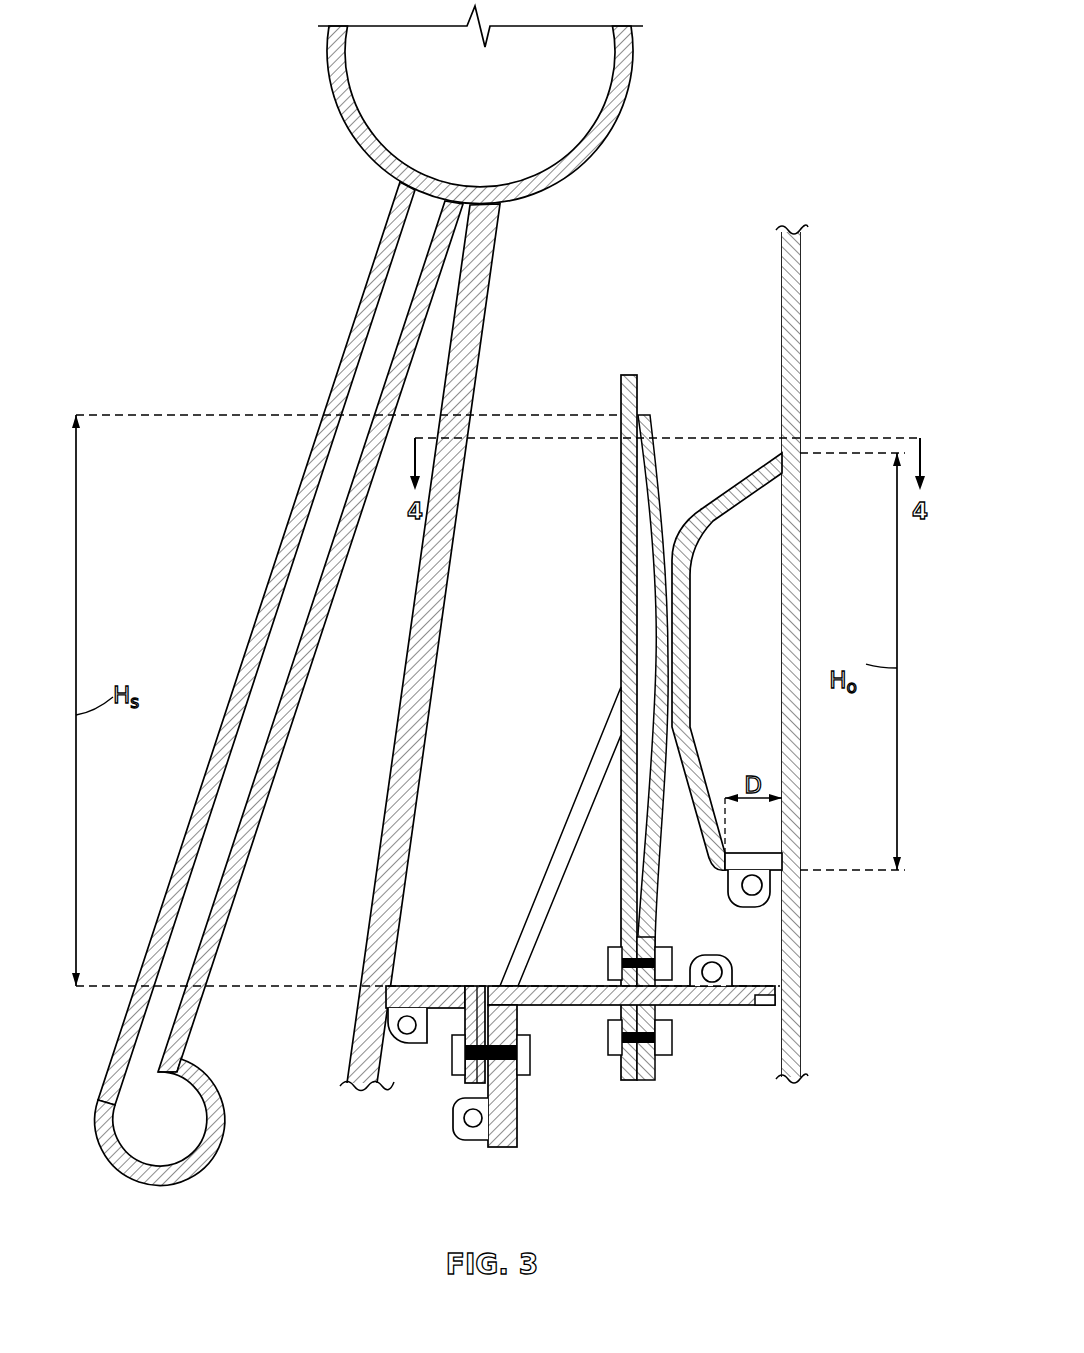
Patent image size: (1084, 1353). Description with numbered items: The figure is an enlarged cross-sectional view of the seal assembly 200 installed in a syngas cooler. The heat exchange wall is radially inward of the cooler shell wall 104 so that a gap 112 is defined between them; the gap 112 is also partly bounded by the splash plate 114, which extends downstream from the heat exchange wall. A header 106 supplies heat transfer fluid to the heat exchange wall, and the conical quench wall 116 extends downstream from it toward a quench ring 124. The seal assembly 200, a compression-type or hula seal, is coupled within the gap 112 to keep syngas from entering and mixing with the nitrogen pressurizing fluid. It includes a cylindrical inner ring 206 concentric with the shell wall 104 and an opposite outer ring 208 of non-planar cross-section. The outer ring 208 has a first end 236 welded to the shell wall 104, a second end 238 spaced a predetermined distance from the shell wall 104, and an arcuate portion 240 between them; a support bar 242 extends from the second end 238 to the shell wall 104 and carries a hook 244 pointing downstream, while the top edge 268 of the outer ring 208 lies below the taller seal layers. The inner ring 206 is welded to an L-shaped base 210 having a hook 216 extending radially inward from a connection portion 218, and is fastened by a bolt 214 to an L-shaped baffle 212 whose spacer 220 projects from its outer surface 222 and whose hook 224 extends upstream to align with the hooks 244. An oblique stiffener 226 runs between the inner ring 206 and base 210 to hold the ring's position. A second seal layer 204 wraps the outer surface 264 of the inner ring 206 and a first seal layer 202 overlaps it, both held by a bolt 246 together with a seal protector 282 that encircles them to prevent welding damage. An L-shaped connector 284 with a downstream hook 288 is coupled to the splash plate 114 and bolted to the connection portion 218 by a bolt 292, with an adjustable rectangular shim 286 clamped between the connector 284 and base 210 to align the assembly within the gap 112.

The cooler shell wall 104 is at (800, 330).
The header 106 is at (345, 107).
The gap 112 is at (586, 268).
The splash plate 114 is at (386, 806).
The quench wall 116 is at (268, 582).
The quench ring 124 is at (160, 1185).
The seal assembly 200 is at (696, 260).
The first seal layer 202 is at (657, 478).
The second seal layer 204 is at (646, 410).
The inner ring 206 is at (621, 540).
The outer ring 208 is at (748, 463).
The base 210 is at (583, 1005).
The baffle 212 is at (720, 1005).
The bolt 214 is at (660, 1058).
The hook 216 is at (470, 1138).
The connection portion 218 is at (508, 1130).
The spacer 220 is at (766, 1005).
The outer surface 222 is at (776, 992).
The hook 224 is at (713, 958).
The stiffener 226 is at (589, 765).
The first end 236 is at (733, 500).
The second end 238 is at (716, 872).
The arcuate portion 240 is at (697, 700).
The support bar 242 is at (752, 852).
The hook 244 is at (762, 880).
The bolt 246 is at (621, 945).
The outer surface 264 is at (640, 657).
The top edge 268 is at (763, 455).
The seal protector 282 is at (656, 945).
The connector 284 is at (407, 996).
The shim 286 is at (482, 990).
The hook 288 is at (405, 1043).
The bolt 292 is at (530, 1060).